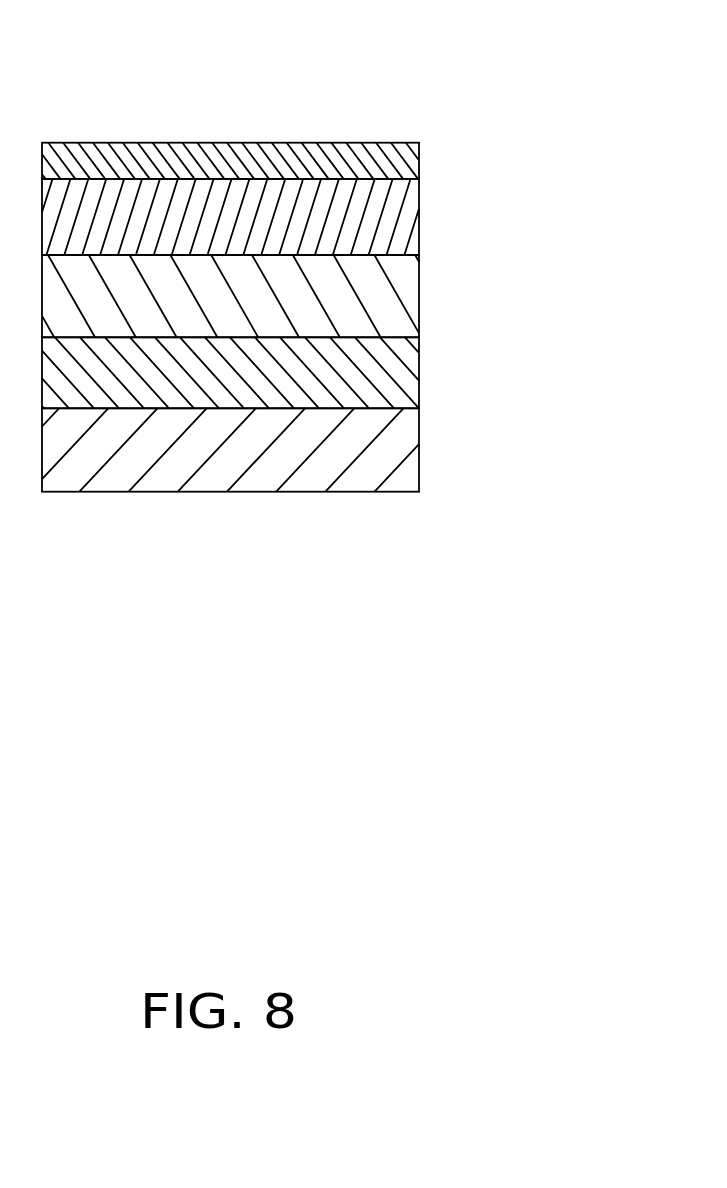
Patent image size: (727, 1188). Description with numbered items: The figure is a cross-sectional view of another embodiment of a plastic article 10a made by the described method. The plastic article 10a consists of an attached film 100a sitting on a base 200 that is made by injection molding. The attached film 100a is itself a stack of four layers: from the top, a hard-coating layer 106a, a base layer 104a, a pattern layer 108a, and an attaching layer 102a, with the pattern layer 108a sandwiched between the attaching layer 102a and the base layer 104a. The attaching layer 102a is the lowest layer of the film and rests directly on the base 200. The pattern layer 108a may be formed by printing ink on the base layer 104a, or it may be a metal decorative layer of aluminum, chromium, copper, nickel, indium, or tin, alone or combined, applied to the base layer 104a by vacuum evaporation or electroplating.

The plastic article 10a is at (341, 275).
The attached film 100a is at (341, 273).
The hard-coating layer 106a is at (397, 168).
The base layer 104a is at (393, 225).
The pattern layer 108a is at (390, 308).
The attaching layer 102a is at (291, 372).
The base 200 is at (397, 448).